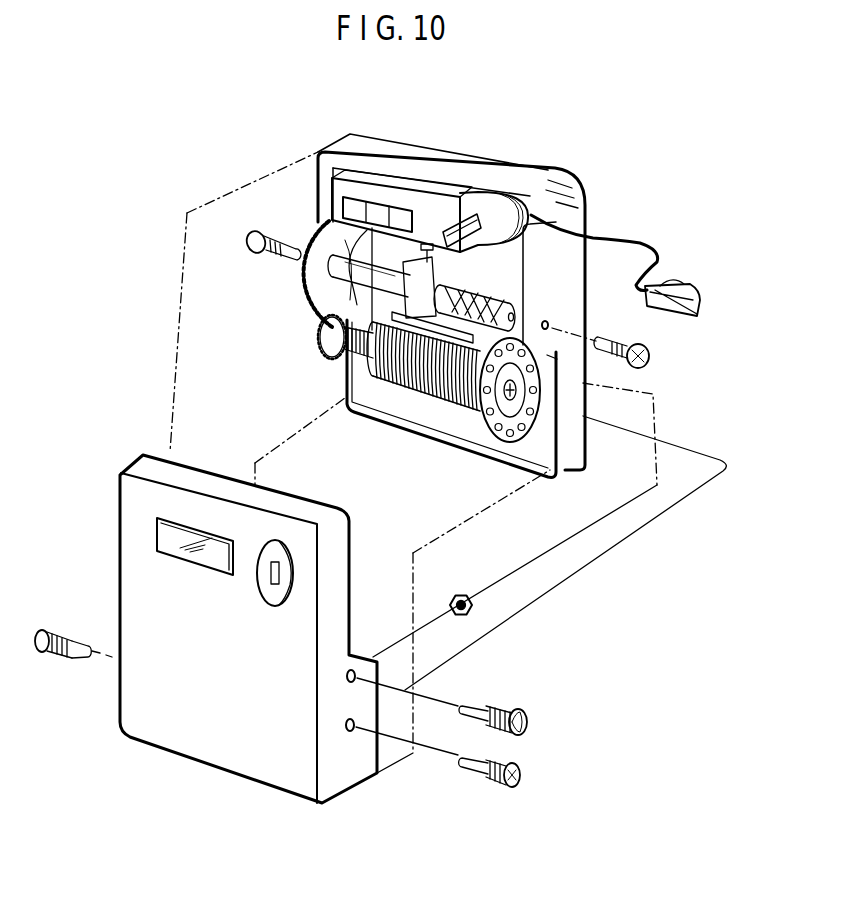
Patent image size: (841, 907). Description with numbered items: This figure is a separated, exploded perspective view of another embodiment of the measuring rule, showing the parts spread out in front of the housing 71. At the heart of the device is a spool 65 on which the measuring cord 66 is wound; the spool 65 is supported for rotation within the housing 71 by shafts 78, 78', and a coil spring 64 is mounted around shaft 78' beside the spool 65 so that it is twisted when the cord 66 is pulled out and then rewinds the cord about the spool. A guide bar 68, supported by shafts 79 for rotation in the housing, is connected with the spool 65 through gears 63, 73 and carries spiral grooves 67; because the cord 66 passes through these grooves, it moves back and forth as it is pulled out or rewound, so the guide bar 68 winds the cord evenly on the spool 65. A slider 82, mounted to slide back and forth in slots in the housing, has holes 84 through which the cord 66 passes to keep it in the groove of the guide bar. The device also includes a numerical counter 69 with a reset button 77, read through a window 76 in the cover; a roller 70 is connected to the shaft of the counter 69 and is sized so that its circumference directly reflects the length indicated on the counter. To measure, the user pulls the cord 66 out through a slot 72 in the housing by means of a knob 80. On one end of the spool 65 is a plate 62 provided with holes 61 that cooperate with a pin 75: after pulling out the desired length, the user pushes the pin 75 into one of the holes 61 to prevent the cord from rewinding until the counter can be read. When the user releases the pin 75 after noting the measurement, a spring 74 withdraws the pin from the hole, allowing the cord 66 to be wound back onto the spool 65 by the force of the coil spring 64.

The holes 61 is at (480, 448).
The plate 62 is at (522, 452).
The gear 63 is at (327, 357).
The coil spring 64 is at (353, 367).
The spool 65 is at (410, 405).
The cord 66 is at (312, 250).
The spiral grooves 67 is at (518, 300).
The guide bar 68 is at (552, 340).
The numerical counter 69 is at (433, 220).
The roller 70 is at (548, 178).
The housing 71 is at (330, 553).
The slot 72 is at (540, 232).
The gear 73 is at (352, 250).
The spring 74 is at (497, 700).
The pin 75 is at (528, 714).
The window 76 is at (165, 538).
The reset button 77 is at (510, 200).
The shaft 78 is at (489, 799).
The shaft 78' is at (73, 680).
The shafts 79 is at (248, 247).
The knob 80 is at (682, 283).
The slider 82 is at (398, 282).
The holes 84 is at (392, 270).